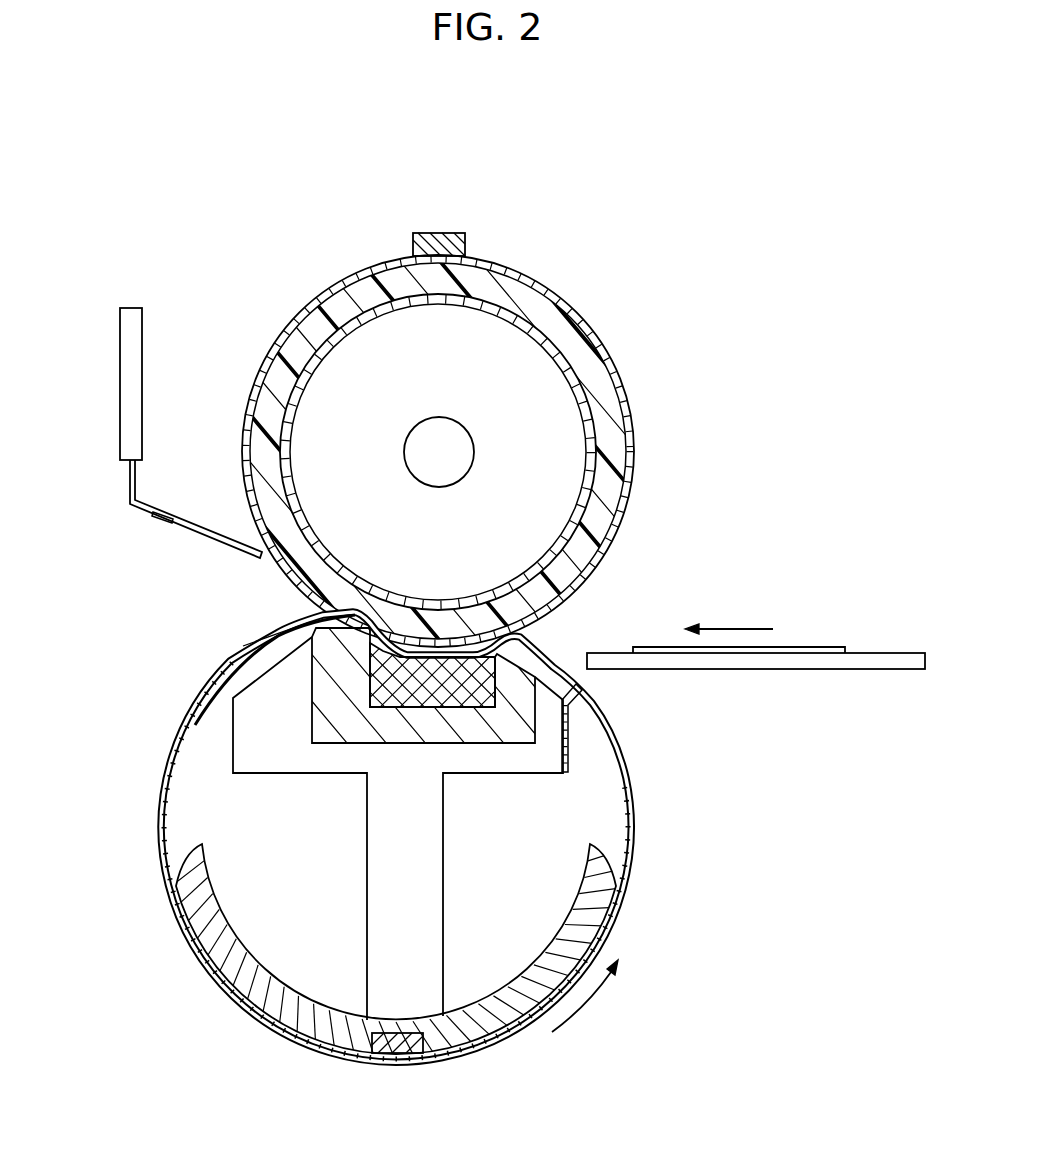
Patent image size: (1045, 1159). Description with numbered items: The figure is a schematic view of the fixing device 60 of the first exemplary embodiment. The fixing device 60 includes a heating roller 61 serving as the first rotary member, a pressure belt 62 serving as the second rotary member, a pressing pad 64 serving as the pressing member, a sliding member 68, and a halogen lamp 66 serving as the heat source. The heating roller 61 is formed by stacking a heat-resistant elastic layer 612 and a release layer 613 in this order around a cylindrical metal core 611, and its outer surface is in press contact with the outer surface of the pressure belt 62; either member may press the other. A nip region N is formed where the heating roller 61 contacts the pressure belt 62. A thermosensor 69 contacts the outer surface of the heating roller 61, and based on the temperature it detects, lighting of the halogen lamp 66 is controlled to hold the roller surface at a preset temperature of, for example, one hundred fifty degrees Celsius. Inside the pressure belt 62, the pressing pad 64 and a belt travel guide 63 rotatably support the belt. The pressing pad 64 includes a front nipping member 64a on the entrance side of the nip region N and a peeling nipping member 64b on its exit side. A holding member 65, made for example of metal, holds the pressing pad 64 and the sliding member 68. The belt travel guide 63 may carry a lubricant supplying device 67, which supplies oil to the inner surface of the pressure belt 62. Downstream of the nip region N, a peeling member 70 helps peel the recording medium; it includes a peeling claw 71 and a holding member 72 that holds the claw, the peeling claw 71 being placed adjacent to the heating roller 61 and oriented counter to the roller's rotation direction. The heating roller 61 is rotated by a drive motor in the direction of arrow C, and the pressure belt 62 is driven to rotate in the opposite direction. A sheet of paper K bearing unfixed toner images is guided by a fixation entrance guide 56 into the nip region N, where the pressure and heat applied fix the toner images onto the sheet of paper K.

The fixing device 60 is at (462, 140).
The heating roller 61 is at (441, 450).
The metal core 611 is at (577, 383).
The heat-resistant elastic layer 612 is at (613, 423).
The release layer 613 is at (630, 485).
The halogen lamp 66 is at (438, 418).
The thermosensor 69 is at (445, 233).
The pressure belt 62 is at (630, 800).
The belt travel guide 63 is at (603, 902).
The pressing pad 64 is at (382, 690).
The front nipping member 64a is at (482, 698).
The peeling nipping member 64b is at (243, 646).
The holding member 65 is at (250, 735).
The lubricant supplying device 67 is at (410, 1045).
The sliding member 68 is at (575, 713).
The peeling member 70 is at (152, 459).
The peeling claw 71 is at (202, 530).
The holding member 72 is at (130, 470).
The fixation entrance guide 56 is at (756, 664).
The sheet of paper K is at (820, 652).
The nip region N is at (353, 563).
The arrow C is at (642, 512).